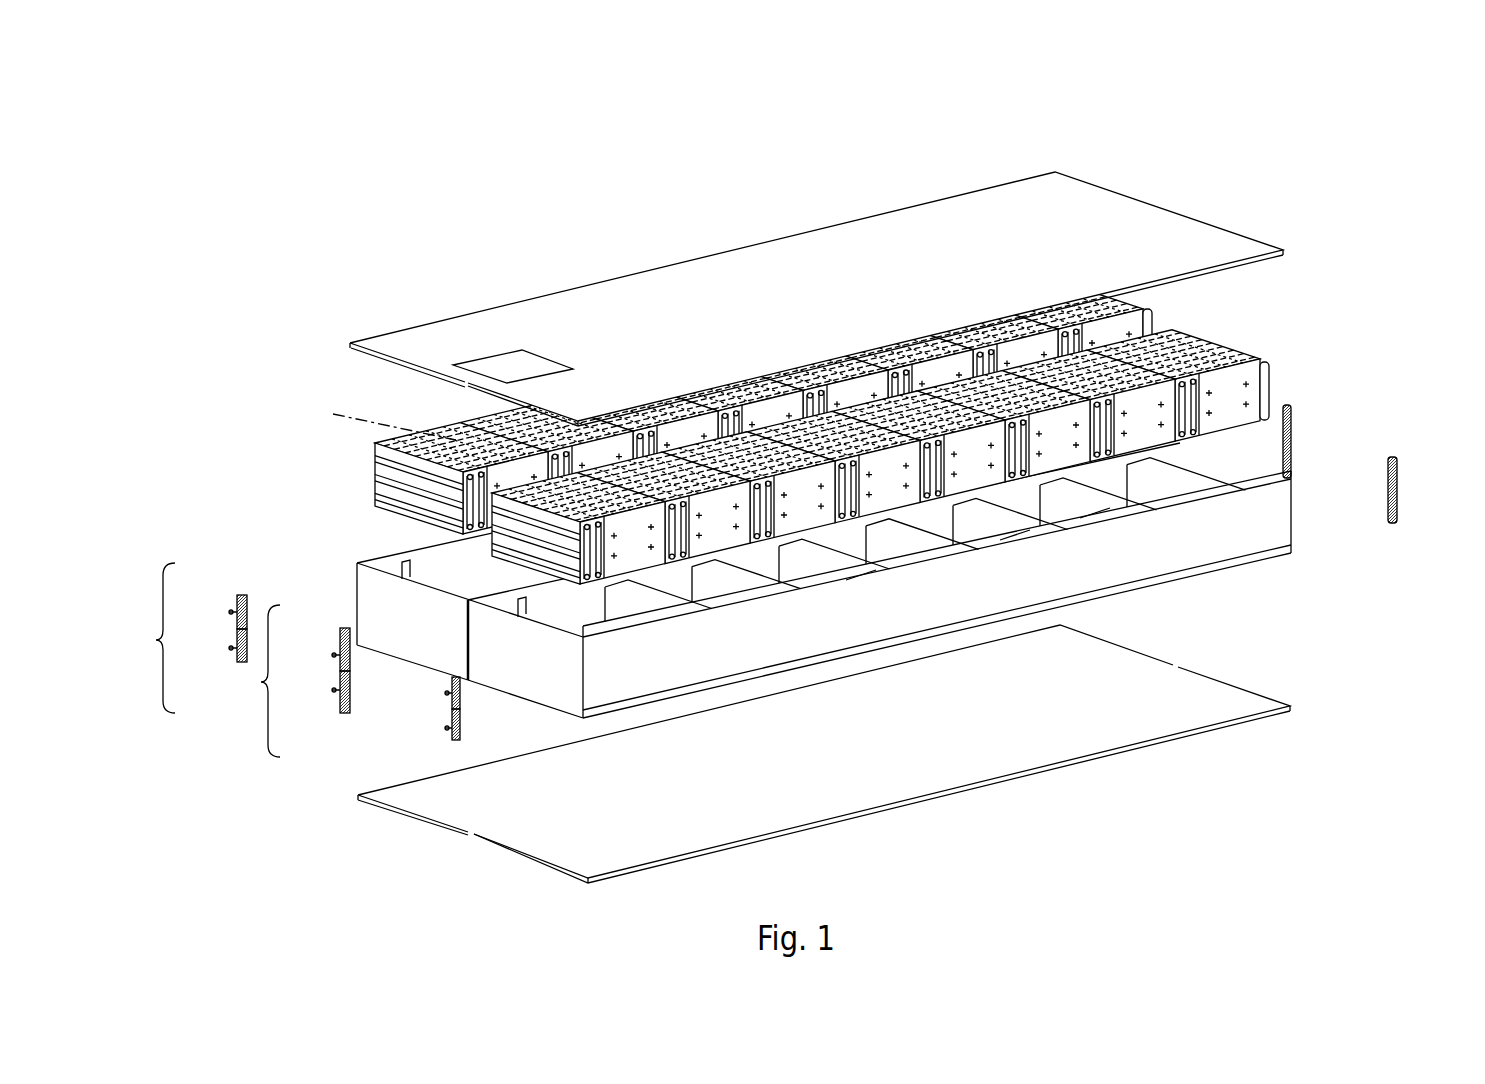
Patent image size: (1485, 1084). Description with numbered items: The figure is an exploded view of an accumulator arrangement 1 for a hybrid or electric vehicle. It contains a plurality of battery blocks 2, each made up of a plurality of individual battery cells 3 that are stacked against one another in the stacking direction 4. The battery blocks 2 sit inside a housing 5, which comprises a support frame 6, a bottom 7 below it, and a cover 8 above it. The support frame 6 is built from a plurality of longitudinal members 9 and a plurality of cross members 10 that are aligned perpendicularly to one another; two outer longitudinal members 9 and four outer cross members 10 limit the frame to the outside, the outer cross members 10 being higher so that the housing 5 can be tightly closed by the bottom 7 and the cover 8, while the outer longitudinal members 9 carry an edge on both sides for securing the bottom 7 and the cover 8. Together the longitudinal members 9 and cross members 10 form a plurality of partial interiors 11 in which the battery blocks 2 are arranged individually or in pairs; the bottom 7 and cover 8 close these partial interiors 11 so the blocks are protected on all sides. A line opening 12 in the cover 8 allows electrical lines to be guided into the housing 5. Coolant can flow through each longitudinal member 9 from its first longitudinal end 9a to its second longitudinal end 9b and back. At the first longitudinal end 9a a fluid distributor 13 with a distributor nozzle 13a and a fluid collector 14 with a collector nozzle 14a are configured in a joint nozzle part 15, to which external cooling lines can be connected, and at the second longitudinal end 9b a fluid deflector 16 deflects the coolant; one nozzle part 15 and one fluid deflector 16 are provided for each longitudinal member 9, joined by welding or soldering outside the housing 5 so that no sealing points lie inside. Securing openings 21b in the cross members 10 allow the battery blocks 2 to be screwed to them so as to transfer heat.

The accumulator arrangement 1 is at (785, 464).
The battery block 2 is at (1147, 316).
The battery cell 3 is at (377, 444).
The stacking direction 4 is at (383, 419).
The housing 5 is at (849, 503).
The support frame 6 is at (849, 571).
The bottom 7 is at (1295, 706).
The cover 8 is at (818, 274).
The longitudinal member 9 is at (819, 571).
The first longitudinal end 9a is at (356, 598).
The second longitudinal end 9b is at (1292, 497).
The cross member 10 is at (370, 578).
The partial interior 11 is at (846, 580).
The line opening 12 is at (528, 370).
The fluid distributor 13 is at (237, 596).
The distributor nozzle 13a is at (232, 611).
The fluid collector 14 is at (237, 660).
The collector nozzle 14a is at (232, 649).
The nozzle part 15 is at (277, 661).
The fluid deflector 16 is at (1293, 412).
The securing opening 21b is at (405, 580).